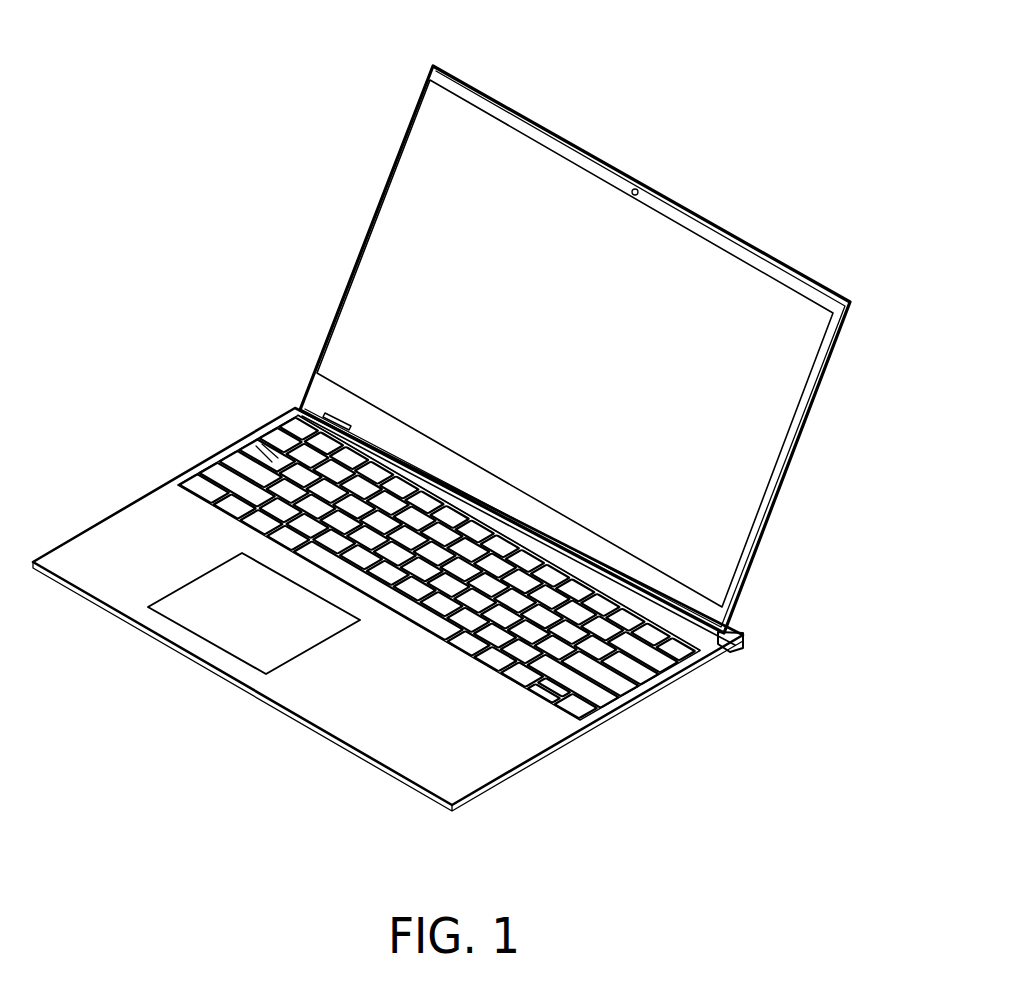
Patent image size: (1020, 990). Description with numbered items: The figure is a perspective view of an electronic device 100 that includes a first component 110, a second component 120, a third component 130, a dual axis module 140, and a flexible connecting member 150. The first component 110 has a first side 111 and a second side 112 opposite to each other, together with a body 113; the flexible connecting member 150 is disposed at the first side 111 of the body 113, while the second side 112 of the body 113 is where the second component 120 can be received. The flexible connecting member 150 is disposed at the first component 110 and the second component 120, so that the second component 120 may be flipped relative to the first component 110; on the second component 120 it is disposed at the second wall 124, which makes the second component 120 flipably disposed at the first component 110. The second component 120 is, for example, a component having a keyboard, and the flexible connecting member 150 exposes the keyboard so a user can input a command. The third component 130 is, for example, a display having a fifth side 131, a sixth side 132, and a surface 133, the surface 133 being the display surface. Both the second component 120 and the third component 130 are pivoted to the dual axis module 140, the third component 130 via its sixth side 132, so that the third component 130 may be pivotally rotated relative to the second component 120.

The electronic device 100 is at (216, 130).
The first component 110 is at (498, 805).
The first side 111 is at (347, 776).
The second side 112 is at (765, 633).
The body 113 is at (545, 760).
The second component 120 is at (655, 660).
The second wall 124 is at (272, 462).
The third component 130 is at (822, 488).
The fifth side 131 is at (612, 97).
The sixth side 132 is at (761, 598).
The surface 133 is at (398, 230).
The dual axis module 140 is at (343, 437).
The flexible connecting member 150 is at (422, 760).